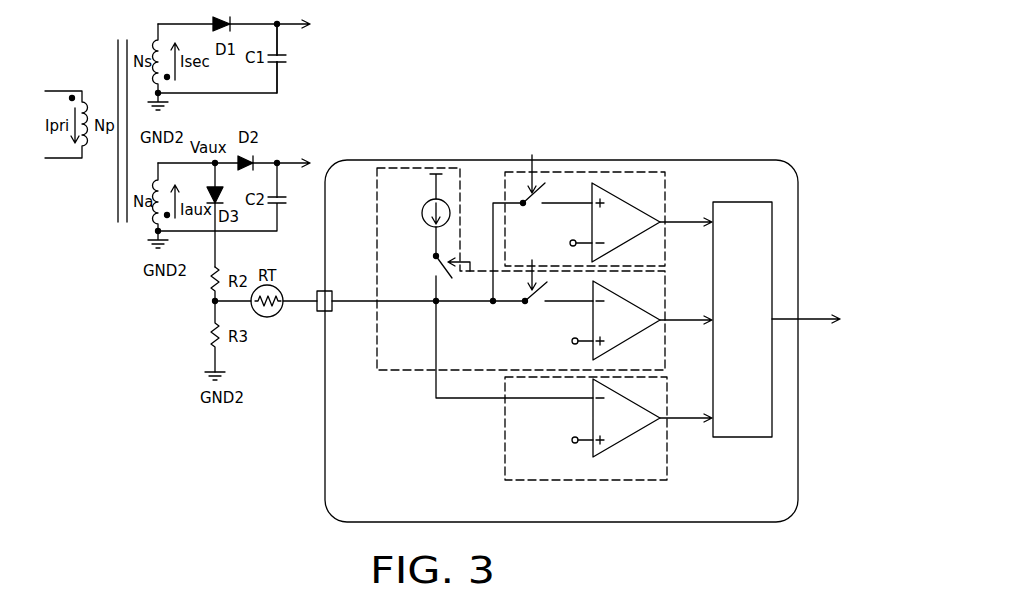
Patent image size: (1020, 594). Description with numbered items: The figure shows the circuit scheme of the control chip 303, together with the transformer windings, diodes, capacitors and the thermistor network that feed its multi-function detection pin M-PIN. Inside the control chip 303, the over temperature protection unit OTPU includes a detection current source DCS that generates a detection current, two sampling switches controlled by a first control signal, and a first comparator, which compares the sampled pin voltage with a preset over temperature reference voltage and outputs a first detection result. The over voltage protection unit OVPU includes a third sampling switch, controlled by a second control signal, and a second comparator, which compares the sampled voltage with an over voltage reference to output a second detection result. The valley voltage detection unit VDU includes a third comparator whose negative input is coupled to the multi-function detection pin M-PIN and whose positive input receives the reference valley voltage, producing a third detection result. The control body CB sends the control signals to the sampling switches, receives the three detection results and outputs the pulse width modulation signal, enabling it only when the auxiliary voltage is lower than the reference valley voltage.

The control chip 303 is at (670, 158).
The multi-function detection pin M-PIN is at (320, 313).
The detection current source DCS is at (450, 212).
The over temperature protection unit OTPU is at (690, 265).
The over voltage protection unit OVPU is at (667, 181).
The valley voltage detection unit VDU is at (670, 455).
The control body CB is at (743, 438).